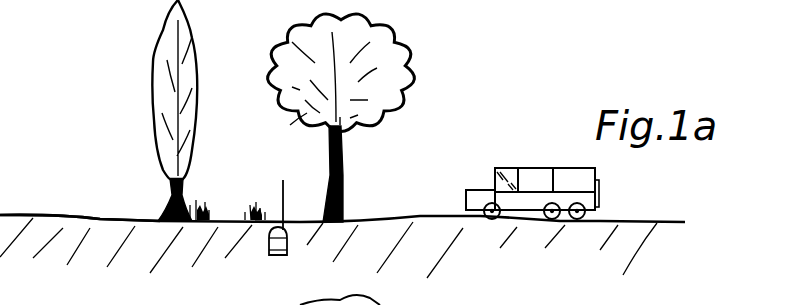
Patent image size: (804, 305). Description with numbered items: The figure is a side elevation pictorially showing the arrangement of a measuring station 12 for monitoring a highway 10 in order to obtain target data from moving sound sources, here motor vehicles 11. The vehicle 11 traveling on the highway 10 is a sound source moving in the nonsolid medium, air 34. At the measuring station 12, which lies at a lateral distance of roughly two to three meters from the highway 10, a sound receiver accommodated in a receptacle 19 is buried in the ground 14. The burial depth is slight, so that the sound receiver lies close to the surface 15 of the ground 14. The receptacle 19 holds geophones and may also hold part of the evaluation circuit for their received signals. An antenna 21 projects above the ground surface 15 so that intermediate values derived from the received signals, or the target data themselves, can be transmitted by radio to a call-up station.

The highway 10 is at (663, 223).
The motor vehicle 11 is at (538, 177).
The measuring station 12 is at (245, 264).
The ground 14 is at (470, 276).
The surface of the ground 15 is at (90, 218).
The receptacle 19 is at (287, 248).
The antenna 21 is at (283, 180).
The air 34 is at (477, 79).